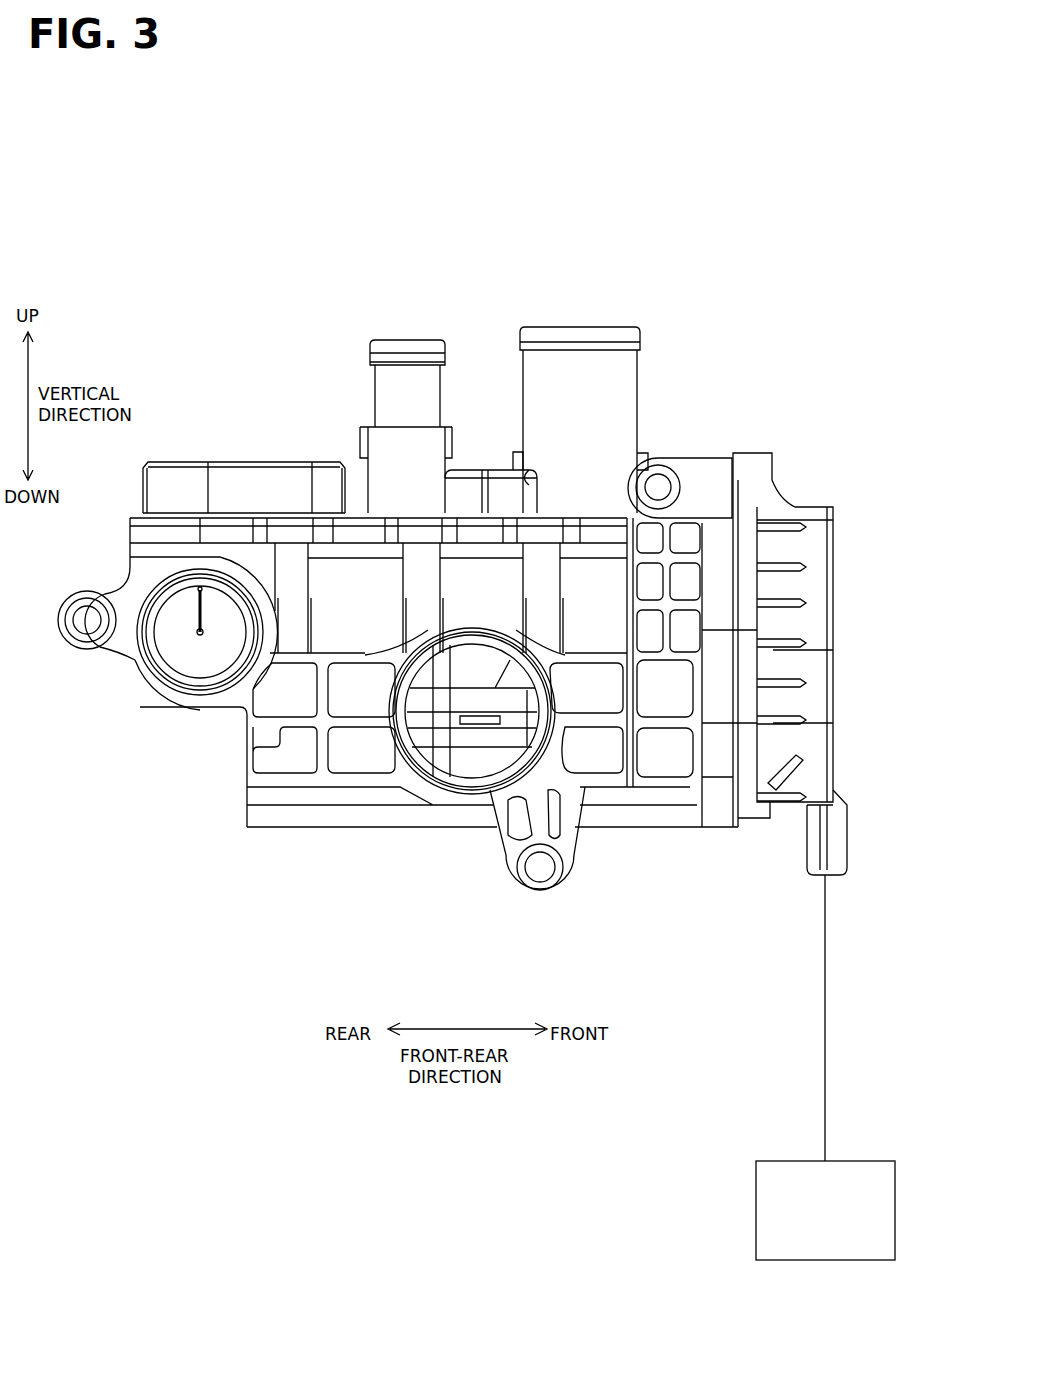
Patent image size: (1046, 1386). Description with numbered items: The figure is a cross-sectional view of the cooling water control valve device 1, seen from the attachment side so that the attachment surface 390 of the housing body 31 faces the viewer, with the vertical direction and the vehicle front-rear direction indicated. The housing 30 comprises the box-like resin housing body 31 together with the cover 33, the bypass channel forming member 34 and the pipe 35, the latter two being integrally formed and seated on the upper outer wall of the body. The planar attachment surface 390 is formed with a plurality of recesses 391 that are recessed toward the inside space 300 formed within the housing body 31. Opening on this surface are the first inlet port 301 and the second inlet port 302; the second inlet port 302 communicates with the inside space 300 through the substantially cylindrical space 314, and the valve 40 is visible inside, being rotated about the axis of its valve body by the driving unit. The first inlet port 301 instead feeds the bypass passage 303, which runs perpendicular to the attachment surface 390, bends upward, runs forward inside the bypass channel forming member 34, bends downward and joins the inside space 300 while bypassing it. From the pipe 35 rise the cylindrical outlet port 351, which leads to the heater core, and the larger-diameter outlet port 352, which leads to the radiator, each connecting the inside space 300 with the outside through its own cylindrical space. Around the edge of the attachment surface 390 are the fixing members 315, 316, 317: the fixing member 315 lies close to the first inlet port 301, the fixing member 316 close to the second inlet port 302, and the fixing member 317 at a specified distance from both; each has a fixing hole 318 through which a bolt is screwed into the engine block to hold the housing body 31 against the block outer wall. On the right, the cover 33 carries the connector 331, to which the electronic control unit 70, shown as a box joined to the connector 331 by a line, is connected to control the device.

The cooling water control valve device 1 is at (735, 224).
The housing 30 is at (320, 470).
The housing body 31 is at (255, 815).
The cover 33 is at (818, 576).
The bypass channel forming member 34 is at (240, 478).
The pipe 35 is at (484, 472).
The valve 40 is at (460, 742).
The electronic control unit 70 is at (793, 1172).
The inside space 300 is at (487, 760).
The first inlet port 301 is at (165, 615).
The second inlet port 302 is at (418, 690).
The bypass passage 303 is at (200, 645).
The cylindrical space 314 is at (442, 752).
The fixing member 315 is at (84, 597).
The fixing member 316 is at (540, 897).
The fixing member 317 is at (680, 462).
The fixing hole 318 is at (660, 488).
The connector 331 is at (855, 857).
The outlet port 351 is at (409, 336).
The outlet port 352 is at (580, 325).
The attachment surface 390 is at (711, 490).
The recess 391 is at (360, 760).